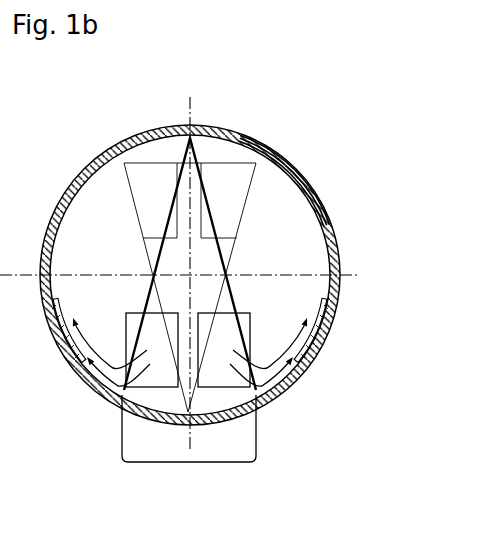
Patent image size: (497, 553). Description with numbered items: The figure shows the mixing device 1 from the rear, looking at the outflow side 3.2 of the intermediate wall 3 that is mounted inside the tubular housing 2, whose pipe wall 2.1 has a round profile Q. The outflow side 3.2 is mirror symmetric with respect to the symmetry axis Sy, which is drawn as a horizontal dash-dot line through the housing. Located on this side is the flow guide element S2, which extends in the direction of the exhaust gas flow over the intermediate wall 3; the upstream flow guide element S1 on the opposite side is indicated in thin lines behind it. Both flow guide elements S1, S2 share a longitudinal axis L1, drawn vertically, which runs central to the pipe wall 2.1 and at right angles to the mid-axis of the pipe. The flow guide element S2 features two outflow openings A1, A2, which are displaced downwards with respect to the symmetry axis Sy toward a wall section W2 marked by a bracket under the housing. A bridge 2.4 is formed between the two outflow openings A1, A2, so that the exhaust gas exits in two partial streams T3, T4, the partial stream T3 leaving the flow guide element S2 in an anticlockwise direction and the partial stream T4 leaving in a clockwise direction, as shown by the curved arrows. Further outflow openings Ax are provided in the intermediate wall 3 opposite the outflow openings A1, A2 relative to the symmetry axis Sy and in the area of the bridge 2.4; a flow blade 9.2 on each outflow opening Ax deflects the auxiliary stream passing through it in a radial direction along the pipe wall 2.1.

The mixing device 1 is at (349, 126).
The tubular housing 2 is at (195, 275).
The round profile Q is at (339, 220).
The pipe wall 2.1 is at (277, 152).
The bridge 2.4 is at (182, 333).
The intermediate wall 3 is at (208, 264).
The flow cross-section QF is at (190, 264).
The outflow side 3.2 is at (310, 248).
The flow blade 9.2 is at (200, 328).
The further outflow openings Ax is at (200, 330).
The axial direction Xa is at (58, 347).
The longitudinal axis L1 is at (226, 266).
The symmetry axis Sy is at (32, 275).
The flow guide element S1 is at (147, 249).
The flow guide element S2 is at (222, 297).
The outflow opening A1 is at (231, 327).
The outflow opening A2 is at (144, 331).
The partial stream T3 is at (341, 373).
The partial stream T4 is at (43, 370).
The wall section W2 is at (142, 462).